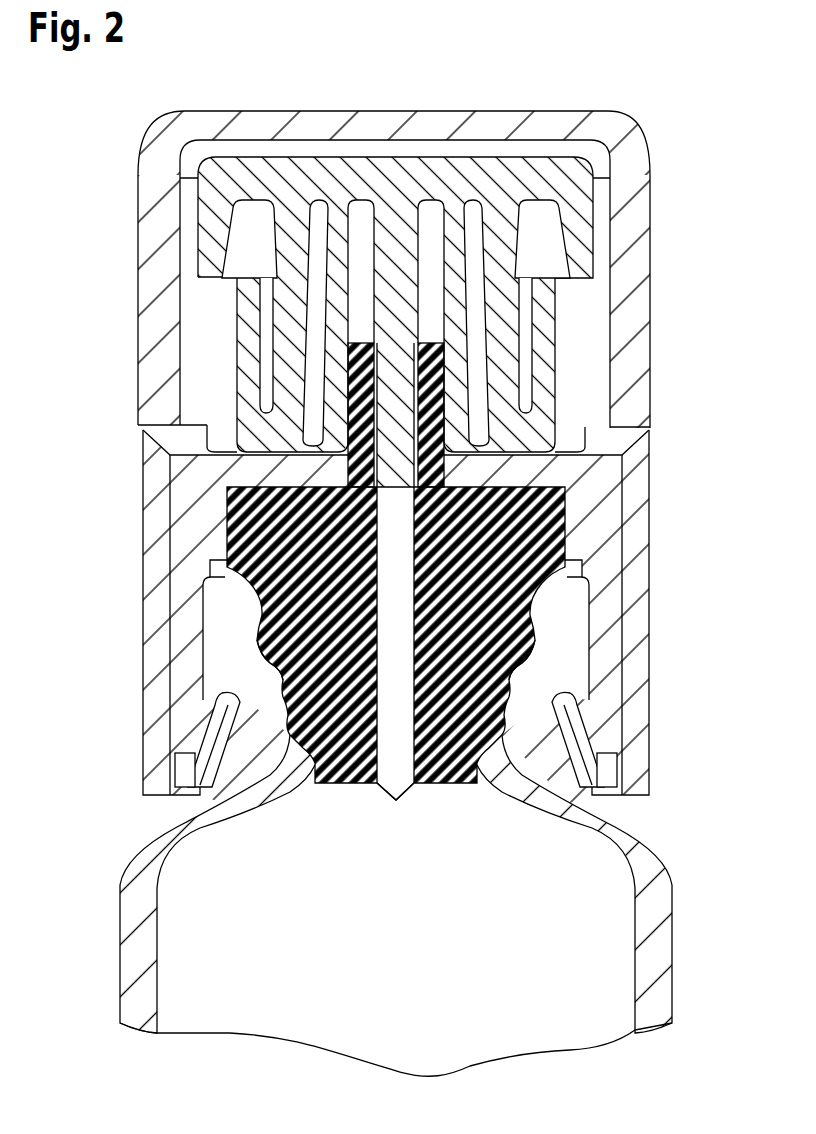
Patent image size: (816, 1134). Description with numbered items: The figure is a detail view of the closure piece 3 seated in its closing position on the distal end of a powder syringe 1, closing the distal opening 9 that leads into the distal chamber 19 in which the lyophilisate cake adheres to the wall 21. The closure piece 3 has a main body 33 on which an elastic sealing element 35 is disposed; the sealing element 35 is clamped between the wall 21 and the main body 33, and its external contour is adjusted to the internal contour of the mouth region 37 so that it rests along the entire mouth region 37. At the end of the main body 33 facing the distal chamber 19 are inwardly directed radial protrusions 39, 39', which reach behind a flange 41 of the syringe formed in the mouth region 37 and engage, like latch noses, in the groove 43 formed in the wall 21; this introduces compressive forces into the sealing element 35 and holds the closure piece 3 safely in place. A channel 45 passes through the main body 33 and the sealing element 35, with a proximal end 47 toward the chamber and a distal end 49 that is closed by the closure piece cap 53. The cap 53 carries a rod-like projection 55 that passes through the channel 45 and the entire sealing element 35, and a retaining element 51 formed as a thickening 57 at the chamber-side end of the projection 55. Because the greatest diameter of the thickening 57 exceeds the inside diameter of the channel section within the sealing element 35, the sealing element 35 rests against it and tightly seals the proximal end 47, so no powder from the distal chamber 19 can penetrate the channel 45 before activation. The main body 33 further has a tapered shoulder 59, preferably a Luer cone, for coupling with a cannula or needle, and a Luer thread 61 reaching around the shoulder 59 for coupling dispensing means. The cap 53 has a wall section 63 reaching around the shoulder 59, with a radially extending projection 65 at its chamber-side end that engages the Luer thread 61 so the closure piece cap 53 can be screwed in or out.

The powder syringe 1 is at (722, 982).
The closure piece 3 is at (658, 58).
The distal opening 9 is at (238, 553).
The distal chamber 19 is at (183, 931).
The wall 21 is at (660, 905).
The main body 33 is at (607, 473).
The sealing element 35 is at (560, 540).
The mouth region 37 is at (530, 668).
The radial protrusion 39 is at (639, 739).
The radial protrusion 39' is at (148, 739).
The flange 41 is at (550, 607).
The groove 43 is at (620, 752).
The channel 45 is at (490, 385).
The proximal end 47 is at (427, 791).
The distal end 49 is at (430, 207).
The retaining element 51 is at (400, 835).
The closure piece cap 53 is at (567, 186).
The rod-like projection 55 is at (393, 318).
The thickening 57 is at (388, 796).
The shoulder 59 is at (450, 270).
The Luer thread 61 is at (250, 380).
The wall section 63 is at (290, 237).
The radially extending projection 65 is at (210, 428).